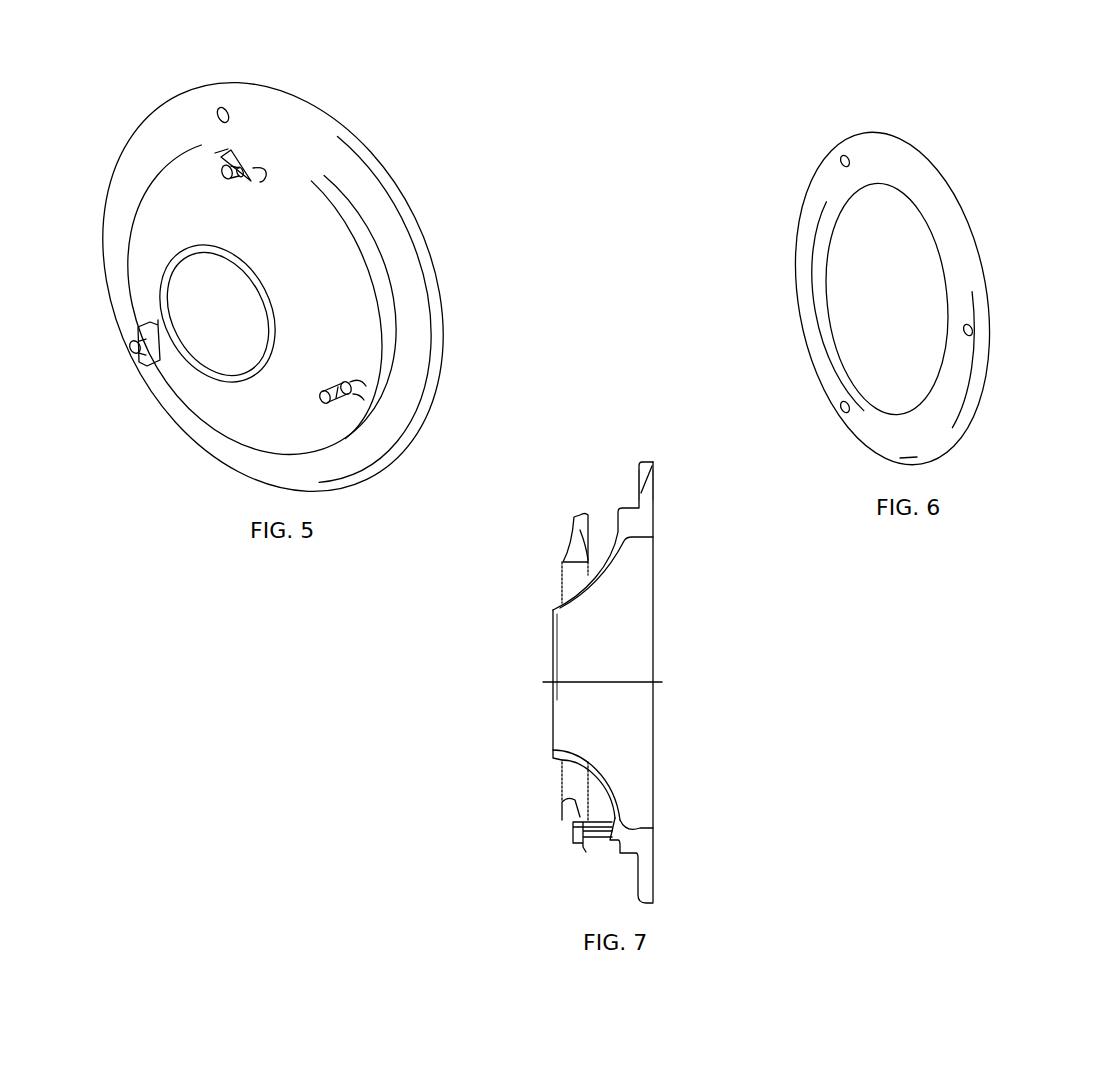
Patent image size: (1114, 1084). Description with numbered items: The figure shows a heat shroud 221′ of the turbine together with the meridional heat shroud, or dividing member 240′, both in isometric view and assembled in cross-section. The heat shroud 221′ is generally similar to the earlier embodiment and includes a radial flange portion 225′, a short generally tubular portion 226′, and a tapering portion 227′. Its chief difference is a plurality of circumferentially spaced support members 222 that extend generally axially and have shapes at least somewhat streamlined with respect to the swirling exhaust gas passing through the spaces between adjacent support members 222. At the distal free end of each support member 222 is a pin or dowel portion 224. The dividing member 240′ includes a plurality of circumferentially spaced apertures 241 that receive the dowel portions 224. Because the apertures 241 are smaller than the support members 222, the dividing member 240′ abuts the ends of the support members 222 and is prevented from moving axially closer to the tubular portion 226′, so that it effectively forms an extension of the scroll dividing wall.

In FIG. 5, the heat shroud 221′ is at (401, 181).
In FIG. 7, the heat shroud 221′ is at (646, 525).
In FIG. 5, the support members 222 is at (245, 182).
In FIG. 7, the support members 222 is at (602, 837).
In FIG. 5, the pin or dowel portion 224 is at (226, 180).
In FIG. 7, the pin or dowel portion 224 is at (573, 827).
In FIG. 5, the radial flange portion 225′ is at (160, 122).
In FIG. 7, the radial flange portion 225′ is at (647, 477).
In FIG. 7, the tubular portion 226′ is at (632, 840).
In FIG. 7, the tapering portion 227′ is at (598, 587).
In FIG. 6, the dividing member 240′ is at (974, 217).
In FIG. 7, the dividing member 240′ is at (574, 537).
In FIG. 6, the apertures 241 is at (844, 166).